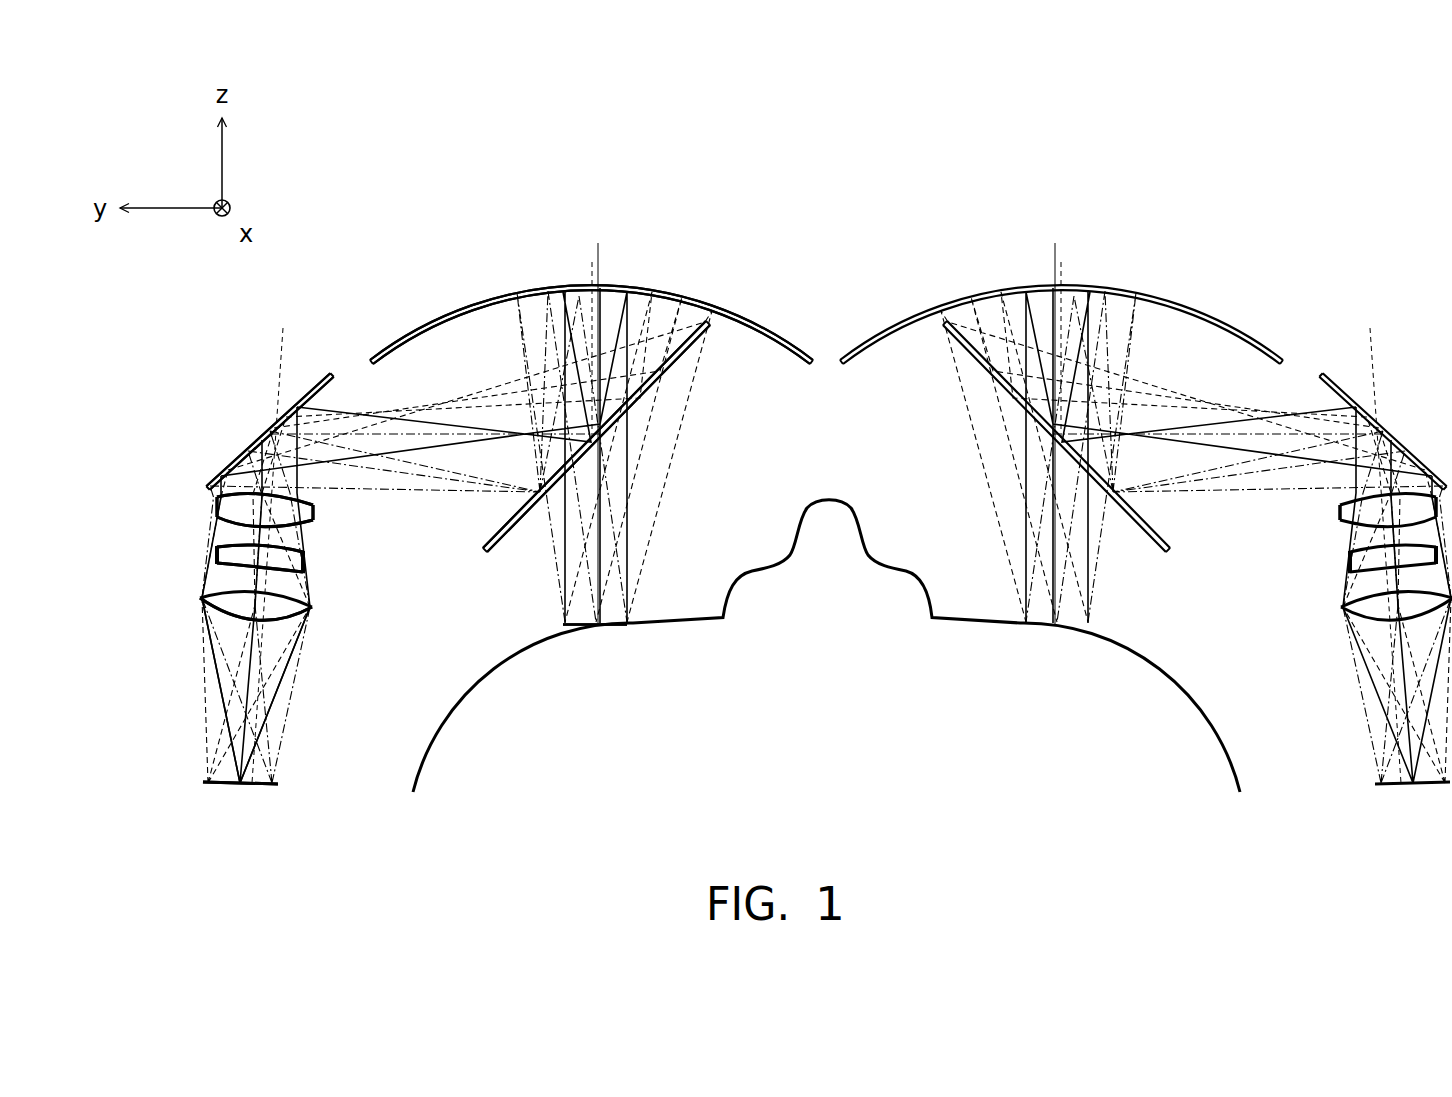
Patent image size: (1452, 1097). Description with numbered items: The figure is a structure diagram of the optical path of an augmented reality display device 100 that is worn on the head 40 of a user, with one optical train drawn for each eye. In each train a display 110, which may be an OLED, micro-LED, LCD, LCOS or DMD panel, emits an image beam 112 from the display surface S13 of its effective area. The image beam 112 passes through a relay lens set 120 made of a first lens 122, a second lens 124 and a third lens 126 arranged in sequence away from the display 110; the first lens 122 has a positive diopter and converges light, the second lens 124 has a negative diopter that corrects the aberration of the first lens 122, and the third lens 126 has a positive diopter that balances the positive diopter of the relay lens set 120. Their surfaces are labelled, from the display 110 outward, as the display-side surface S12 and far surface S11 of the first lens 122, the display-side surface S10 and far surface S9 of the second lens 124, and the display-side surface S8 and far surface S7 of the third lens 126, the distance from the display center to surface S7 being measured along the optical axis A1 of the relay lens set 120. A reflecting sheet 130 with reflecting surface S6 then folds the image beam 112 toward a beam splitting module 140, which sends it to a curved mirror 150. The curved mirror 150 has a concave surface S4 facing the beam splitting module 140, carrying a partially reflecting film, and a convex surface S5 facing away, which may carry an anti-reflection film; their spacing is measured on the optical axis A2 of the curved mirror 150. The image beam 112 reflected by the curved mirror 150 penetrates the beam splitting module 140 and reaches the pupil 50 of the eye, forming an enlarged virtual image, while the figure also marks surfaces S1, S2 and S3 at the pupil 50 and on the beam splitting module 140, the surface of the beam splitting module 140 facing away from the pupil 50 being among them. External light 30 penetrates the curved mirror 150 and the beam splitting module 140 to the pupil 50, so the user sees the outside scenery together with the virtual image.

The augmented reality display device 100 is at (257, 347).
The display 110 is at (229, 788).
The image beam 112 is at (214, 645).
The relay lens set 120 is at (135, 492).
The first lens 122 is at (199, 600).
The second lens 124 is at (215, 553).
The third lens 126 is at (214, 499).
The reflecting sheet 130 is at (238, 462).
The beam splitting module 140 is at (484, 552).
The curved mirror 150 is at (452, 313).
The external light 30 is at (602, 257).
The head 40 is at (1215, 745).
The pupil 50 is at (560, 625).
The optical axis of the relay lens set A1 is at (285, 331).
The optical axis of the curved mirror A2 is at (590, 273).
The exit pupil surface S1 is at (580, 630).
The beam splitter first surface S2 is at (687, 353).
The beam splitter second surface S3 is at (497, 535).
The concave surface of the curved mirror S4 is at (781, 348).
The convex surface of the curved mirror S5 is at (754, 320).
The reflecting surface of the reflecting sheet S6 is at (328, 382).
The surface of the third lens facing away from the display S7 is at (304, 497).
The surface of the third lens facing the display S8 is at (308, 523).
The surface of the second lens facing away from the display S9 is at (229, 469).
The surface of the second lens facing the display S10 is at (285, 578).
The surface of the first lens facing away from the display S11 is at (243, 541).
The surface of the first lens facing the display S12 is at (283, 629).
The display surface S13 is at (220, 776).